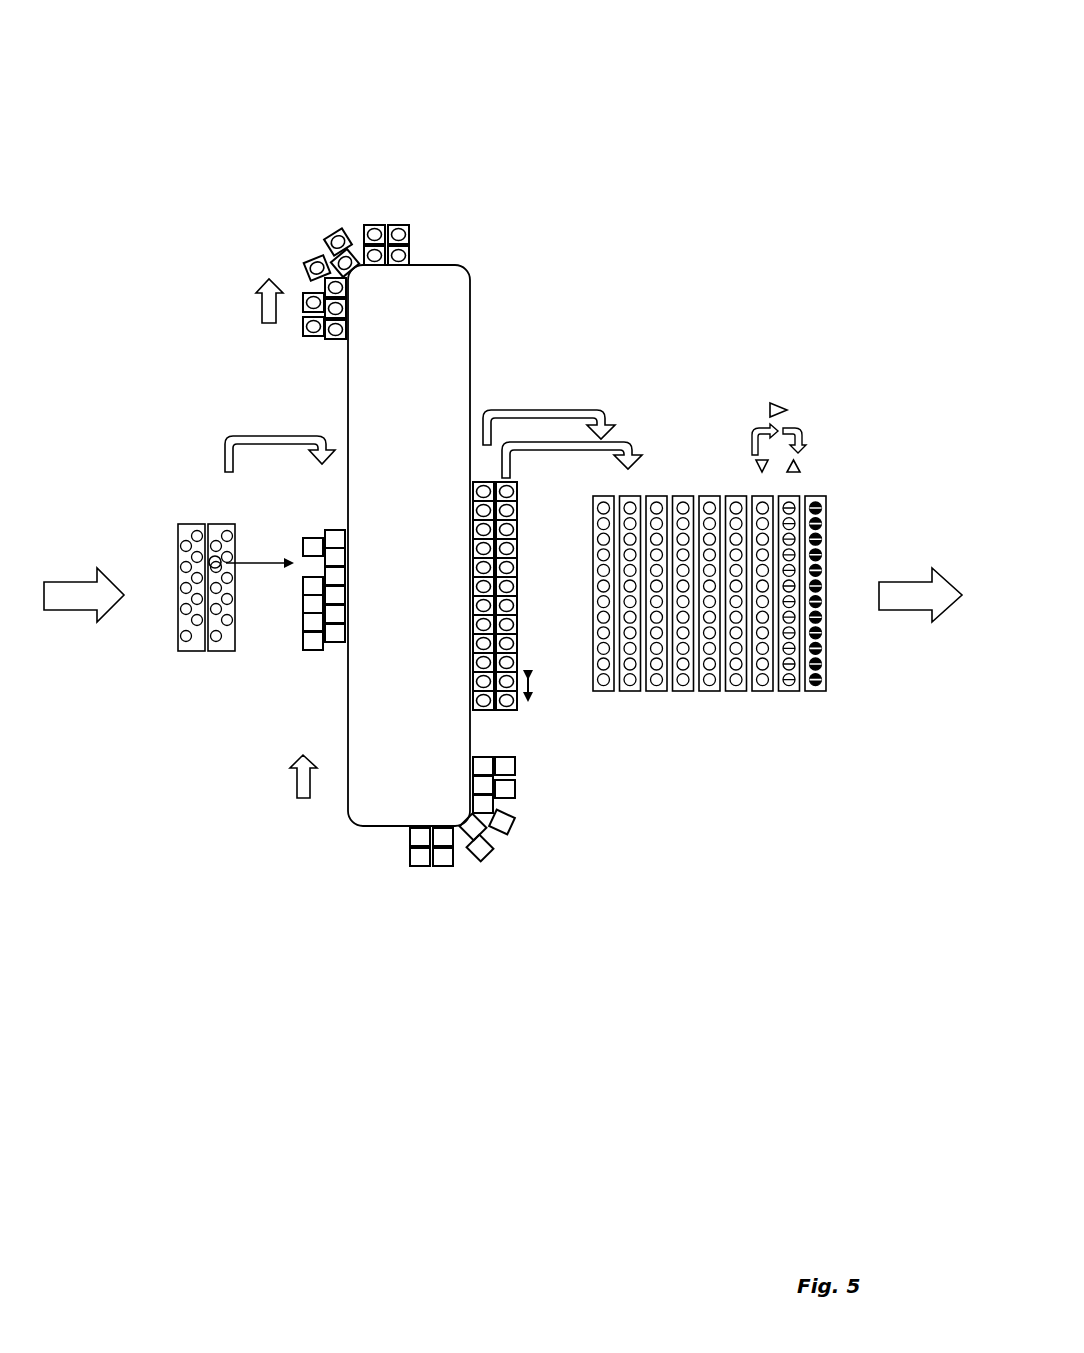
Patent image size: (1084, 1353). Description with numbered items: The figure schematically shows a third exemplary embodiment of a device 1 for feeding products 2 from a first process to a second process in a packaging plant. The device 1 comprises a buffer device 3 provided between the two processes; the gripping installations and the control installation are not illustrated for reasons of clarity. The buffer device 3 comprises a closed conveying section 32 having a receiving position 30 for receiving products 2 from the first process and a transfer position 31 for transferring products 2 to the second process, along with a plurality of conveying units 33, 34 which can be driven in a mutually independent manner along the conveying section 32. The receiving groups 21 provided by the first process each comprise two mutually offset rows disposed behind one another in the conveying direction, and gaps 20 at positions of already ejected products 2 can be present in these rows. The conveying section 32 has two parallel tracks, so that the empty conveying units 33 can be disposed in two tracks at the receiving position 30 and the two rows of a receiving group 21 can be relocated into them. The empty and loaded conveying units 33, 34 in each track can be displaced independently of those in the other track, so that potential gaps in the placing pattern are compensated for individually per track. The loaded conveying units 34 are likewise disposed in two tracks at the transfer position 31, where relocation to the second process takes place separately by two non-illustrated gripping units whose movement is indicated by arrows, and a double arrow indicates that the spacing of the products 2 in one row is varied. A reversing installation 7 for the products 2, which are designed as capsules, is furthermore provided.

The device 1 is at (234, 102).
The products 2 is at (183, 646).
The buffer device 3 is at (400, 152).
The reversing installation 7 is at (775, 368).
The gaps 20 is at (214, 565).
The receiving groups 21 is at (225, 664).
The receiving position 30 is at (316, 700).
The transfer position 31 is at (532, 738).
The conveying section 32 is at (348, 797).
The empty conveying units 33 is at (420, 860).
The loaded conveying units 34 is at (405, 225).